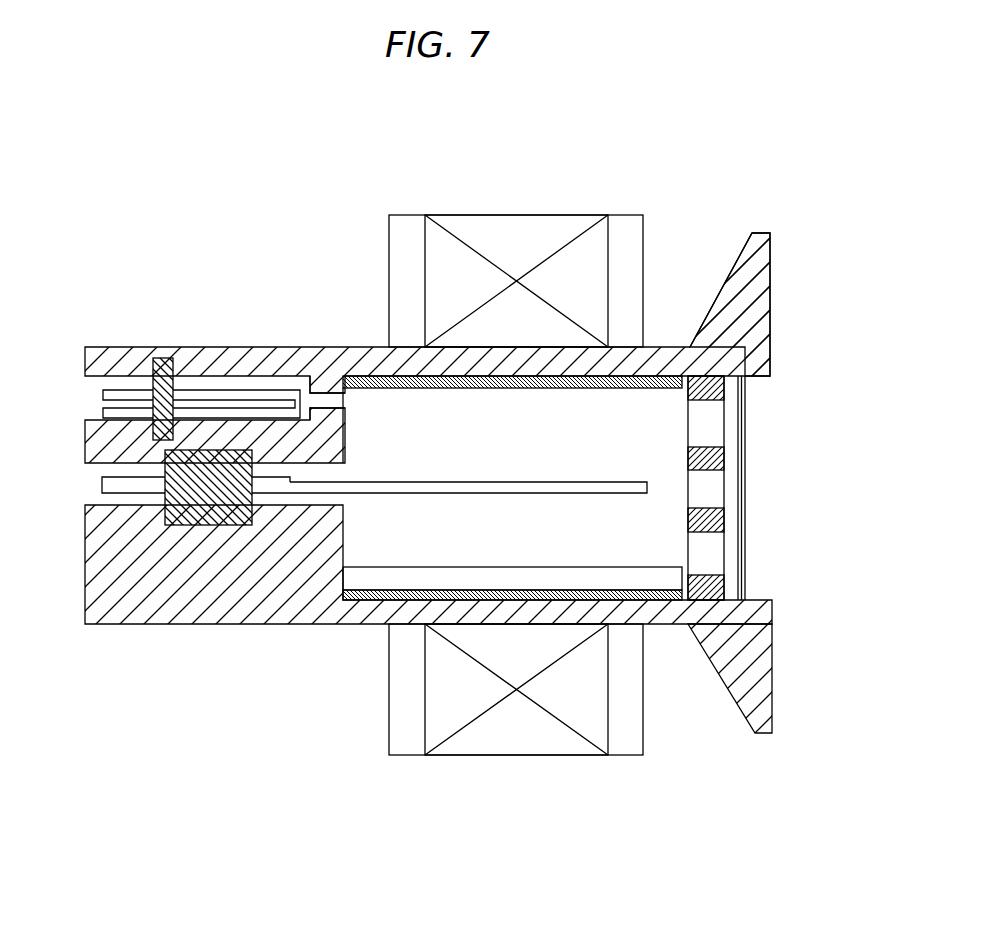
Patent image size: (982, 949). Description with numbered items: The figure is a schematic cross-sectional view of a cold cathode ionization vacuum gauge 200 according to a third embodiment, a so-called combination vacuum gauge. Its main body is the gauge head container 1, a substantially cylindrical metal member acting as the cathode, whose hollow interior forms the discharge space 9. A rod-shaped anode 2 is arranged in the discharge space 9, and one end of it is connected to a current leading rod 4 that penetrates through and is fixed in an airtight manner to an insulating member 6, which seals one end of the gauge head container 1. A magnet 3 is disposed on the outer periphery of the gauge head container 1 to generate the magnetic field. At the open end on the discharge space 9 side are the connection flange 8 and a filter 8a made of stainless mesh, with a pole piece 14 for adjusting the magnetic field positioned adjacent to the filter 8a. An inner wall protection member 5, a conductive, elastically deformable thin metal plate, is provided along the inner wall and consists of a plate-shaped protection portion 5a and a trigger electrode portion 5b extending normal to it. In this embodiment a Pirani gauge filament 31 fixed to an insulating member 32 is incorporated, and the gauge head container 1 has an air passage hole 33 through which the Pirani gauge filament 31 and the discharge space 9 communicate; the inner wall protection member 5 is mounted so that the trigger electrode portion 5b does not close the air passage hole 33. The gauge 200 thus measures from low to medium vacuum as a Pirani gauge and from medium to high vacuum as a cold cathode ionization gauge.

The cold cathode ionization vacuum gauge 200 is at (314, 196).
The gauge head container 1 is at (266, 610).
The anode 2 is at (548, 475).
The magnet 3 is at (532, 222).
The current leading rod 4 is at (100, 485).
The inner wall protection member 5 is at (832, 600).
The protection portion 5a is at (645, 580).
The trigger electrode portion 5b is at (760, 602).
The insulating member 6 is at (190, 513).
The connection flange 8 is at (772, 710).
The filter 8a is at (745, 512).
The discharge space 9 is at (620, 527).
The pole piece 14 is at (724, 462).
The Pirani gauge filament 31 is at (243, 388).
The insulating member 32 is at (167, 358).
The air passage hole 33 is at (328, 393).